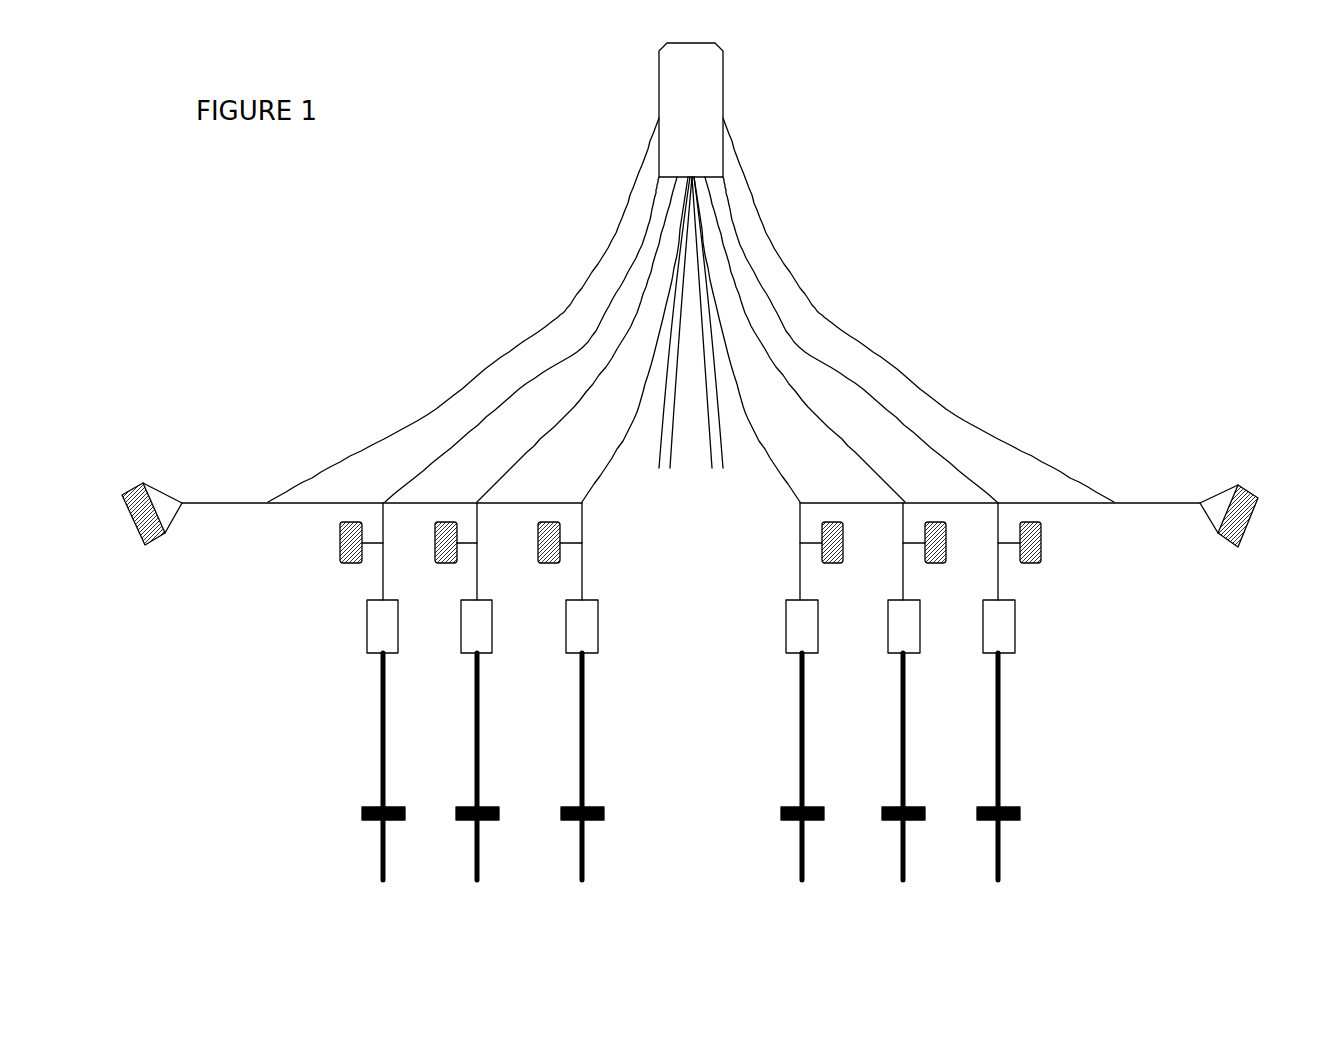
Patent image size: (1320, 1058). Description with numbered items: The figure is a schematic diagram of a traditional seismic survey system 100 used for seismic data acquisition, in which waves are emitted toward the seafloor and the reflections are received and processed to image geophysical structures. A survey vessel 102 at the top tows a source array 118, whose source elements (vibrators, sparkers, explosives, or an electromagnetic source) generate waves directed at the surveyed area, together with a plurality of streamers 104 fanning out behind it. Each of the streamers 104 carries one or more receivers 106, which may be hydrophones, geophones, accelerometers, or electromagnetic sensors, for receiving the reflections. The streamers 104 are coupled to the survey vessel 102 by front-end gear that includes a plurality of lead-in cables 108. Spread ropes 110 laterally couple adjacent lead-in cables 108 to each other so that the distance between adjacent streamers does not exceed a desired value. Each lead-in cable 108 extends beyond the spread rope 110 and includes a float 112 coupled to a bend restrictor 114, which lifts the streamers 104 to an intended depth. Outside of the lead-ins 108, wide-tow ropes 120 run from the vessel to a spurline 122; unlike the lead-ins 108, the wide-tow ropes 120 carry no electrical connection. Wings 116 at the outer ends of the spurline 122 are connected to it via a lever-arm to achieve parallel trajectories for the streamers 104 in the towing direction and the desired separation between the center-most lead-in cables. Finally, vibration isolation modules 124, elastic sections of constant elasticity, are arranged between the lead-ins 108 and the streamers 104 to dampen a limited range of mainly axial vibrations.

The seismic survey system 100 is at (269, 243).
The survey vessel 102 is at (723, 94).
The streamers 104 is at (383, 693).
The receivers 106 is at (360, 808).
The lead-in cables 108 is at (584, 347).
The spread ropes 110 is at (411, 505).
The float 112 is at (338, 552).
The bend restrictor 114 is at (378, 510).
The wings 116 is at (130, 490).
The source array 118 is at (723, 481).
The wide-tow ropes 120 is at (608, 243).
The spurline 122 is at (222, 500).
The vibration isolation modules 124 is at (367, 628).